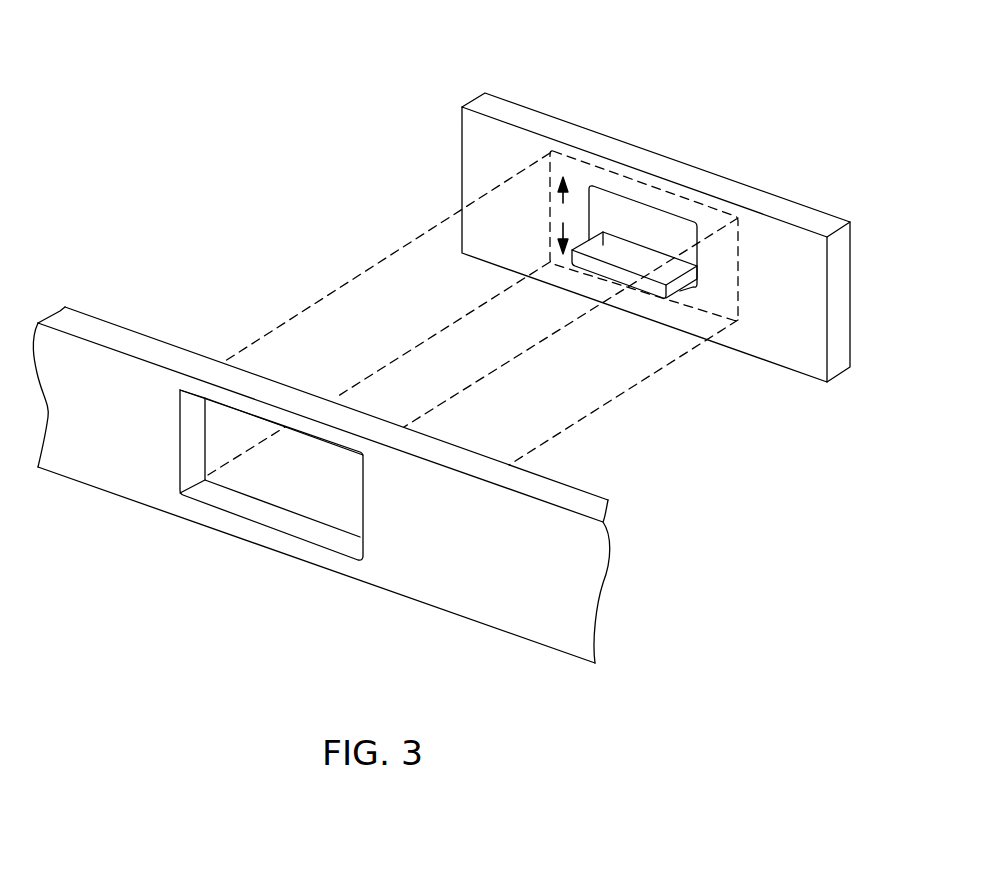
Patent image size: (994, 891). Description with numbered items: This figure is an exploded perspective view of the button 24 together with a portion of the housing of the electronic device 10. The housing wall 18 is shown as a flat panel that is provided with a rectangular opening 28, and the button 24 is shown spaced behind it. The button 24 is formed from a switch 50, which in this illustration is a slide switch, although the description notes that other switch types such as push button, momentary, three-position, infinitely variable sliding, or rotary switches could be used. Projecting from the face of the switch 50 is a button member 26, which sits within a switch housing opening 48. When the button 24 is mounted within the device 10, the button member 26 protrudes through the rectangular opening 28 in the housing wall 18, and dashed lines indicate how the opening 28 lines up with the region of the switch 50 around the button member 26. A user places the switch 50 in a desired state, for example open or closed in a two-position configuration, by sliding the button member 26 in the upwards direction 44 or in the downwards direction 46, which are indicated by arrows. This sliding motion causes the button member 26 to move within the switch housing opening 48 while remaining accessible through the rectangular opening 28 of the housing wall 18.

The device 10 is at (208, 79).
The housing wall 18 is at (482, 593).
The button 24 is at (464, 83).
The button member 26 is at (656, 291).
The rectangular opening 28 is at (365, 507).
The upwards direction 44 is at (563, 195).
The downwards direction 46 is at (563, 233).
The switch housing opening 48 is at (635, 202).
The switch 50 is at (768, 203).